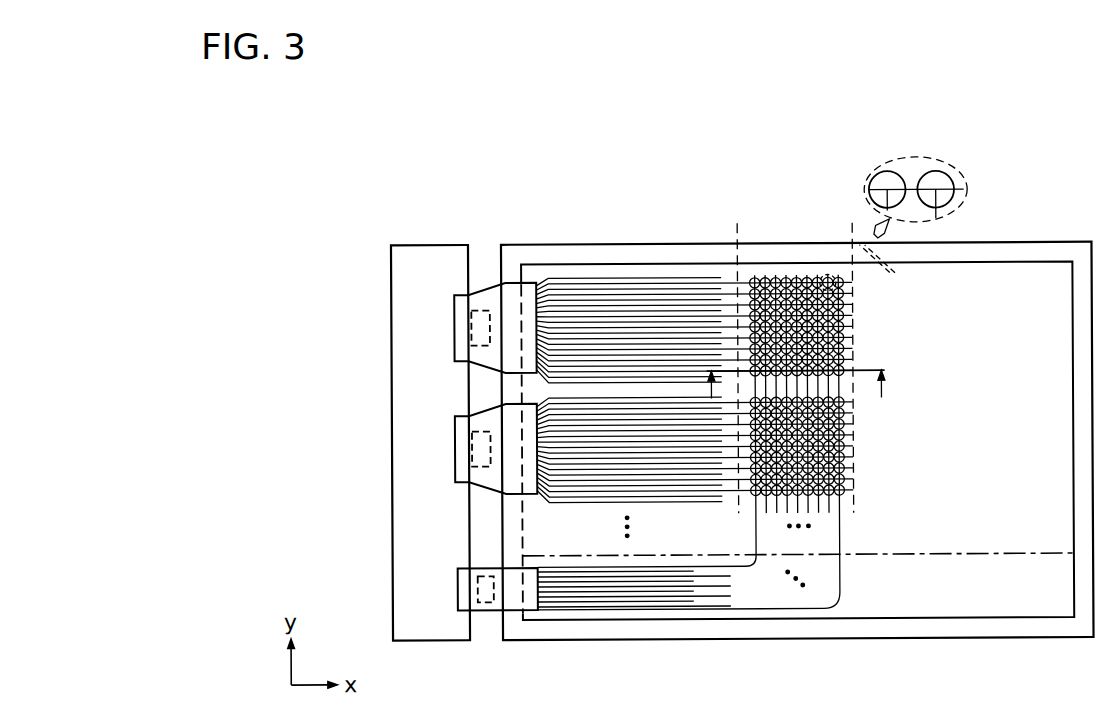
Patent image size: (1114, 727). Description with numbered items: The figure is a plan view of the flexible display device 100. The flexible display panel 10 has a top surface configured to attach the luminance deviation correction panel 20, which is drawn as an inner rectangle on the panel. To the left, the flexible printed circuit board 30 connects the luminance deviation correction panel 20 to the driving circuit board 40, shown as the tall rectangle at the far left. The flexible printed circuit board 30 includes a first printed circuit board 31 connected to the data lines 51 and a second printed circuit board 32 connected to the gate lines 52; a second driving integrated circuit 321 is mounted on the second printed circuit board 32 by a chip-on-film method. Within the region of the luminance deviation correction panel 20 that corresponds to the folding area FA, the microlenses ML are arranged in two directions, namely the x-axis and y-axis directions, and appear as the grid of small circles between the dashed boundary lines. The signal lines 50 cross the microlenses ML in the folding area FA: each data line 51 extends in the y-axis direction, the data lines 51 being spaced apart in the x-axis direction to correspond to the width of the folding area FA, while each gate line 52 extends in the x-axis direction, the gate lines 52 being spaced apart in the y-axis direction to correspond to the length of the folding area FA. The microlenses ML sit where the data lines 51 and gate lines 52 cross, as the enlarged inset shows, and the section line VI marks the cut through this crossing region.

The flexible display device 100 is at (708, 80).
The flexible display panel 10 is at (569, 243).
The luminance deviation correction panel 20 is at (657, 263).
The driving circuit board 40 is at (400, 344).
The flexible printed circuit board 30 is at (338, 478).
The first printed circuit board 31 is at (467, 588).
The second printed circuit board 32 is at (467, 470).
The second driving integrated circuit 321 is at (466, 438).
The signal lines 50 is at (1036, 128).
The data line 51 is at (941, 207).
The gate line 52 is at (960, 187).
The microlenses ML is at (922, 178).
The folding area FA is at (853, 230).
The section line VI- VI is at (799, 398).